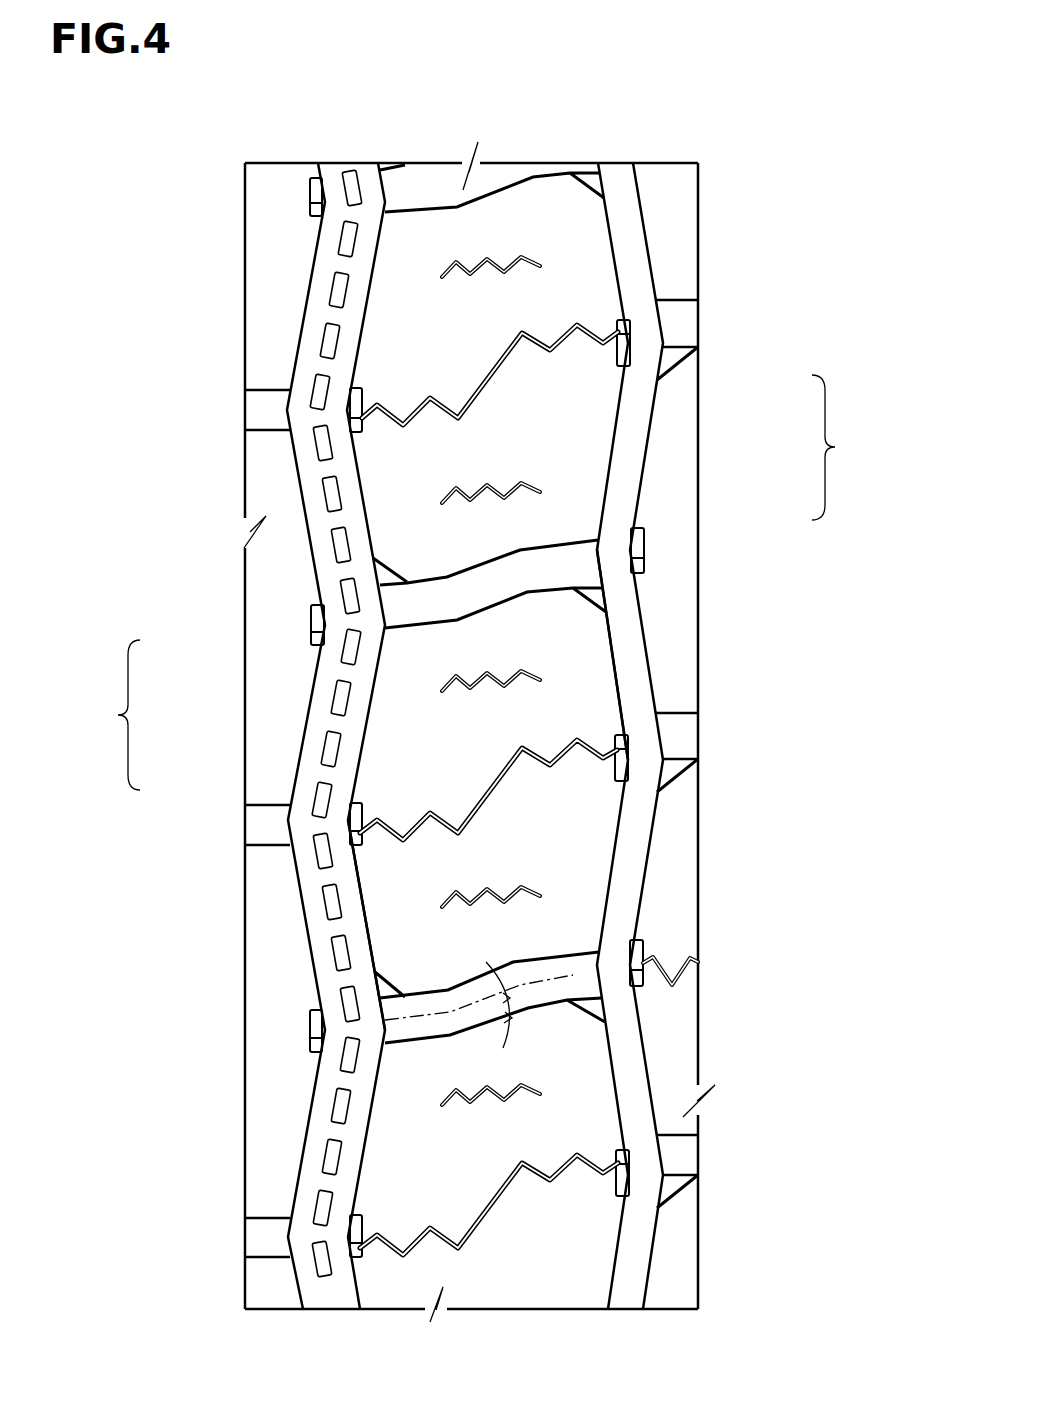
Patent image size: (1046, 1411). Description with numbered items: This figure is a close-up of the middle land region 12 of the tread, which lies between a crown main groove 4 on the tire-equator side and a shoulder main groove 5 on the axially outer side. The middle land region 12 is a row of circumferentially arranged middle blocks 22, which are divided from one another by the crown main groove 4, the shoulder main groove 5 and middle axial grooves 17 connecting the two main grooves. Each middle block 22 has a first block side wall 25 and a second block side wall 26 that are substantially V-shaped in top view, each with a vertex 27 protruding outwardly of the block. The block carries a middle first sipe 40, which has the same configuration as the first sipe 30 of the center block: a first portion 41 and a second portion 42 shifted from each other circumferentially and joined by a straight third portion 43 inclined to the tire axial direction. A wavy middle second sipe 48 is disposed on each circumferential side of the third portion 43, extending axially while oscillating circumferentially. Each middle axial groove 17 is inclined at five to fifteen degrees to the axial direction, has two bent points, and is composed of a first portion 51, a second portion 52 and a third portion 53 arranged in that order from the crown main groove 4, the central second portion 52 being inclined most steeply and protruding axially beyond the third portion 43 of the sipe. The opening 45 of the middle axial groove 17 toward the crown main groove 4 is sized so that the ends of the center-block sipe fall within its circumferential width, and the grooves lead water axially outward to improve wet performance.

The crown main groove 4 is at (625, 225).
The shoulder main groove 5 is at (372, 195).
The middle land region 12 is at (515, 225).
The middle axial groove 17 is at (626, 608).
The middle block 22 is at (555, 400).
The first block side wall 25 is at (625, 680).
The second block side wall 26 is at (350, 878).
The vertex 27 is at (347, 823).
The first sipe 30 is at (668, 968).
The middle first sipe 40 is at (346, 767).
The first portion 41 is at (555, 748).
The second portion 42 is at (420, 830).
The third portion 43 is at (485, 785).
The opening 45 is at (598, 975).
The middle second sipe 48 is at (480, 263).
The first portion 51 is at (573, 563).
The second portion 52 is at (488, 590).
The third portion 53 is at (413, 600).